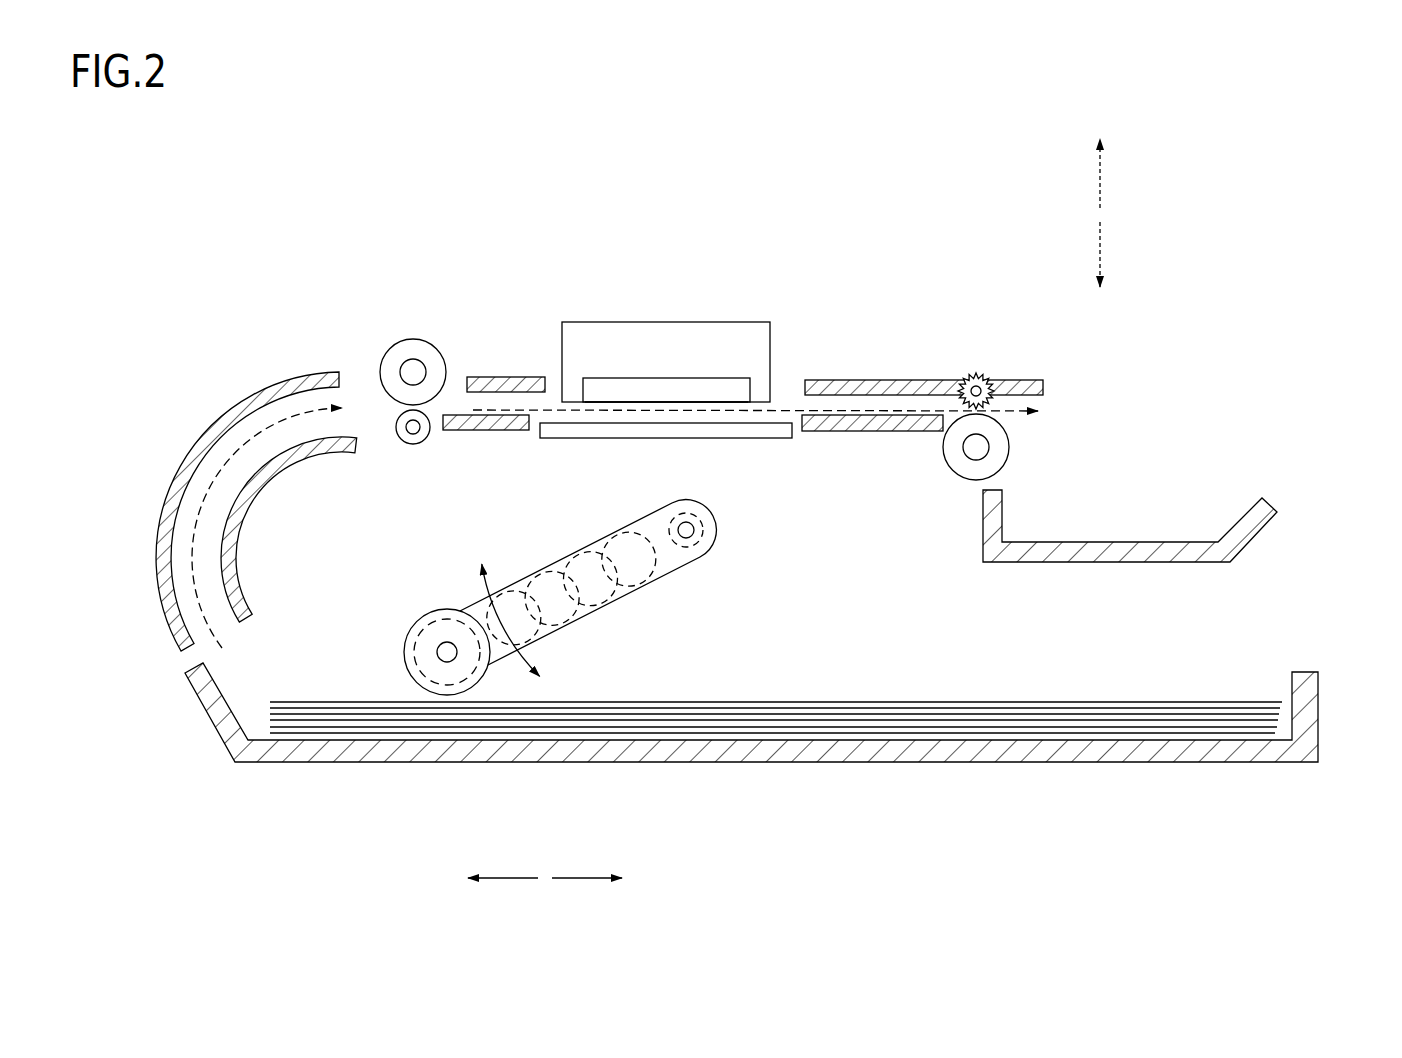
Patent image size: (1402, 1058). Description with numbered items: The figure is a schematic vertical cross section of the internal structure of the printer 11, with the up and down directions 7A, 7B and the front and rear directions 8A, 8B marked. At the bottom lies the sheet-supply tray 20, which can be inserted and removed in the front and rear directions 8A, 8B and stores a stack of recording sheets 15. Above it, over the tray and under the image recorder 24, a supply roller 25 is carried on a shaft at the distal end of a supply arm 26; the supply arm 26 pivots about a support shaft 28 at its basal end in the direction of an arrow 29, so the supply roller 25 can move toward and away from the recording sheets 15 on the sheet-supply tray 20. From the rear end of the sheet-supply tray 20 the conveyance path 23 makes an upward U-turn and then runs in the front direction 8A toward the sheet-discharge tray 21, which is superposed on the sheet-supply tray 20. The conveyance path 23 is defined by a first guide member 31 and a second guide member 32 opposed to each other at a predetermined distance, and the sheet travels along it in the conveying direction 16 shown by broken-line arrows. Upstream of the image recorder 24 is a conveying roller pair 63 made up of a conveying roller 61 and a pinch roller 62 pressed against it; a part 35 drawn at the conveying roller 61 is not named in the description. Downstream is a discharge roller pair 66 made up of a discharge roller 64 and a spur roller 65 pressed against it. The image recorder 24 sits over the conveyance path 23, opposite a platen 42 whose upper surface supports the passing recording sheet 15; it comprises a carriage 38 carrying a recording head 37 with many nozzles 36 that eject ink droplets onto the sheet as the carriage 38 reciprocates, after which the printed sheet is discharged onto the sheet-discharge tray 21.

The printer 11 is at (490, 197).
The recording sheets 15 is at (877, 700).
The conveying direction 16 is at (183, 545).
The sheet-supply tray 20 is at (980, 763).
The sheet-discharge tray 21 is at (1058, 541).
The conveyance path 23 is at (574, 471).
The image recorder 24 is at (666, 379).
The supply roller 25 is at (428, 620).
The supply arm 26 is at (560, 560).
The support shaft 28 is at (686, 522).
The arrow 29 is at (478, 590).
The first guide member 31 is at (159, 588).
The second guide member 32 is at (241, 586).
The roller shaft 35 is at (428, 362).
The nozzles 36 is at (627, 404).
The recording head 37 is at (663, 378).
The carriage 38 is at (750, 322).
The platen 42 is at (740, 440).
The conveying roller 61 is at (426, 344).
The pinch roller 62 is at (413, 445).
The conveying roller pair 63 is at (428, 368).
The discharge roller 64 is at (1010, 455).
The spur roller 65 is at (992, 378).
The discharge roller pair 66 is at (1013, 382).
The up direction 7A is at (1103, 180).
The down direction 7B is at (1103, 235).
The front direction 8A is at (580, 876).
The rear direction 8B is at (508, 876).